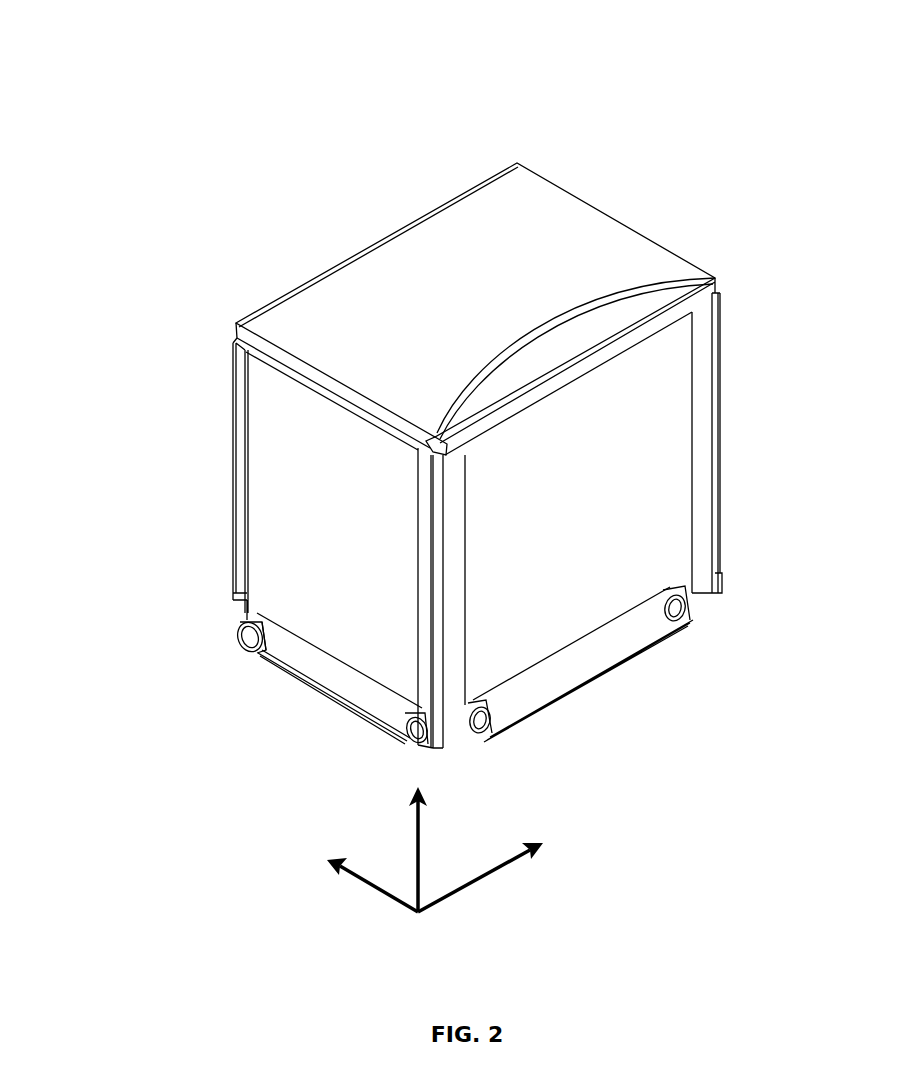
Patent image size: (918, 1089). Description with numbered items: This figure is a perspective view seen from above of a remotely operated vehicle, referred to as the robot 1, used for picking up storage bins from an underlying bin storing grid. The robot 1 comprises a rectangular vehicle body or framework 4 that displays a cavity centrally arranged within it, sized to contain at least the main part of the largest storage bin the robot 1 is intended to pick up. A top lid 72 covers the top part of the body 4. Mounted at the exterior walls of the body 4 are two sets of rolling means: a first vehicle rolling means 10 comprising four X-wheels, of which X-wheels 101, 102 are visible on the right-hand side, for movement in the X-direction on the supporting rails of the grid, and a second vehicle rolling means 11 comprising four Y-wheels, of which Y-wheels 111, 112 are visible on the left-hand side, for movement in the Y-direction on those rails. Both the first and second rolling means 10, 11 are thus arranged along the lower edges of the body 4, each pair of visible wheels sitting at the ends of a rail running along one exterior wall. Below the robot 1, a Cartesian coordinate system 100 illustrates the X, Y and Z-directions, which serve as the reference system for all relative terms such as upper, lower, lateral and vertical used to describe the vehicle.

The robot 1 is at (462, 409).
The top lid 72 is at (462, 288).
The vehicle body 4 is at (316, 529).
The first vehicle rolling means 10 is at (664, 667).
The X-wheel 101 is at (677, 610).
The X-wheel 102 is at (478, 722).
The second vehicle rolling means 11 is at (246, 700).
The Y-wheel 111 is at (422, 730).
The Y-wheel 112 is at (248, 638).
The Cartesian coordinate system 100 is at (628, 832).